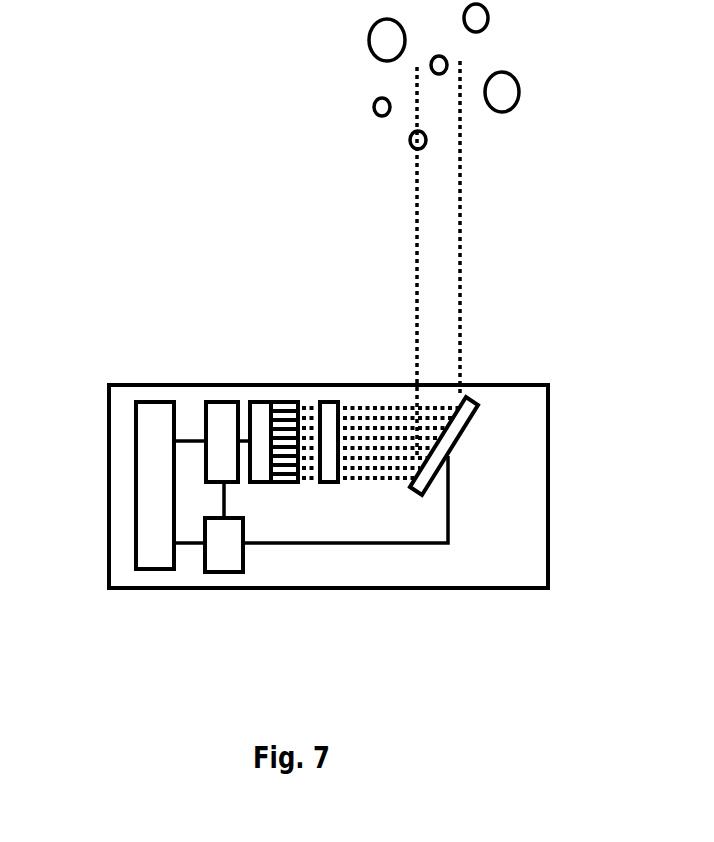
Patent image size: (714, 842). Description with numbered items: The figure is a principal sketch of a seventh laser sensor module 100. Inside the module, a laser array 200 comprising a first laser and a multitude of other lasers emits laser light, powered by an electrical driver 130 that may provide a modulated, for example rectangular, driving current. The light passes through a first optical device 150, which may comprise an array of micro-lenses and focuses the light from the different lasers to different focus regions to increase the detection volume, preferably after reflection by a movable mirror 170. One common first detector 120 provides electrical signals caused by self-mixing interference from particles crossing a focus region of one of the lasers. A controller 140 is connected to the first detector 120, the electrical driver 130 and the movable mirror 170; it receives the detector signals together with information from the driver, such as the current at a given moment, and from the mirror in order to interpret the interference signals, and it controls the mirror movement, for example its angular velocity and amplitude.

The laser sensor module 100 is at (135, 385).
The first detector 120 is at (222, 402).
The electrical driver 130 is at (136, 498).
The controller 140 is at (225, 572).
The first optical device 150 is at (329, 402).
The movable mirror 170 is at (462, 437).
The laser array 200 is at (255, 402).